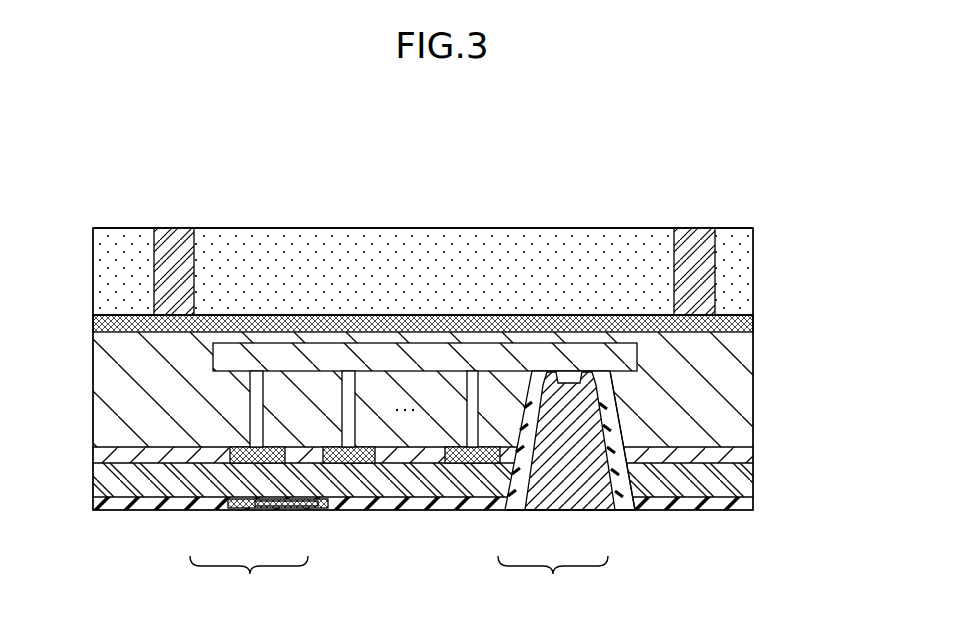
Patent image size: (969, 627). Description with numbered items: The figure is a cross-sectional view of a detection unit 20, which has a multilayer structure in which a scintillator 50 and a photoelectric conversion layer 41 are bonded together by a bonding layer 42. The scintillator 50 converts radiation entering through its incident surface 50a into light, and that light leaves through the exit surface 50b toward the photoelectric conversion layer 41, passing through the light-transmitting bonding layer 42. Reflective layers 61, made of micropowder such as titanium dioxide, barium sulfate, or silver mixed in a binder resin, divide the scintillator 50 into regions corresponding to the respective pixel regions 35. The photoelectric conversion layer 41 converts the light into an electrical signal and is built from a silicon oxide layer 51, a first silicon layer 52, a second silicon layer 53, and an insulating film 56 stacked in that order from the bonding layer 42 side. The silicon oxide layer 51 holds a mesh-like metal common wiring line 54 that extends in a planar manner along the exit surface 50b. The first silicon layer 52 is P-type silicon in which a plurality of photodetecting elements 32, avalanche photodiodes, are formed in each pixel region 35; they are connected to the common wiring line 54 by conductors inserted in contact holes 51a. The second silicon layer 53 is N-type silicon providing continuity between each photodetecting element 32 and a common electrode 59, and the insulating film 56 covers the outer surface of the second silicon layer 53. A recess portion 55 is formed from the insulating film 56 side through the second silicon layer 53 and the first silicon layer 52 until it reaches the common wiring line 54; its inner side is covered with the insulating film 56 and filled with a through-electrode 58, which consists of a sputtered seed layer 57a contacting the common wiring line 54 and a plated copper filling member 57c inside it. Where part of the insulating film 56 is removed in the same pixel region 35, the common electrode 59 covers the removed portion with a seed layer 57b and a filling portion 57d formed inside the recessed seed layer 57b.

The detection unit 20 is at (755, 146).
The photodetecting element 32 is at (232, 445).
The pixel region 35 is at (193, 192).
The photoelectric conversion layer 41 is at (820, 328).
The bonding layer 42 is at (753, 323).
The scintillator 50 is at (598, 231).
The incident surface 50a is at (509, 228).
The exit surface 50b is at (190, 317).
The silicon oxide layer 51 is at (705, 411).
The contact hole 51a is at (252, 390).
The first silicon layer 52 is at (93, 450).
The second silicon layer 53 is at (93, 480).
The common wiring line 54 is at (625, 355).
The recess portion 55 is at (623, 422).
The insulating film 56 is at (93, 502).
The seed layer 57a is at (530, 510).
The seed layer 57b is at (230, 512).
The filling member 57c is at (578, 510).
The filling portion 57d is at (280, 512).
The through-electrode 58 is at (553, 579).
The common electrode 59 is at (249, 579).
The reflective layer 61 is at (178, 228).